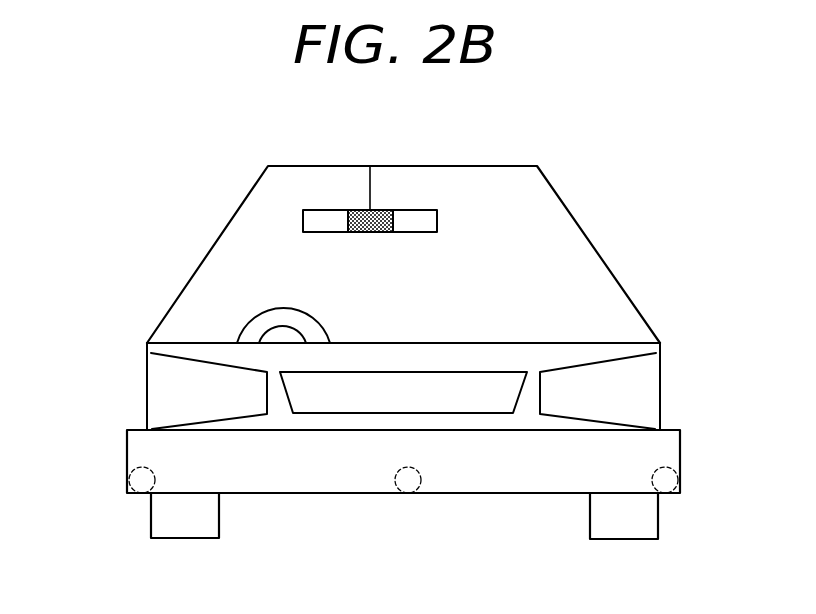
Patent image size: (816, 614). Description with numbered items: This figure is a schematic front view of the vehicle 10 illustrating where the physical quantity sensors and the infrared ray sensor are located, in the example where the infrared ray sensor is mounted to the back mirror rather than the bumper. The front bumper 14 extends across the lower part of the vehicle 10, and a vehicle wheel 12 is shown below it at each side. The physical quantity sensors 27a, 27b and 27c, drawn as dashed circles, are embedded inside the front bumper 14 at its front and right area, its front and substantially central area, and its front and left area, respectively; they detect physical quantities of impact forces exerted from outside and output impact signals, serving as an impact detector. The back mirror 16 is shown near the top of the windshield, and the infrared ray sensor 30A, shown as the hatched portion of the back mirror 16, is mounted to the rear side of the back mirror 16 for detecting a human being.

The vehicle 10 is at (559, 199).
The vehicle wheel 12 is at (150, 522).
The front bumper 14 is at (316, 494).
The back mirror 16 is at (437, 218).
The infrared ray sensor 30A is at (354, 211).
The physical quantity sensor 27a is at (129, 474).
The physical quantity sensor 27b is at (422, 494).
The physical quantity sensor 27c is at (679, 480).